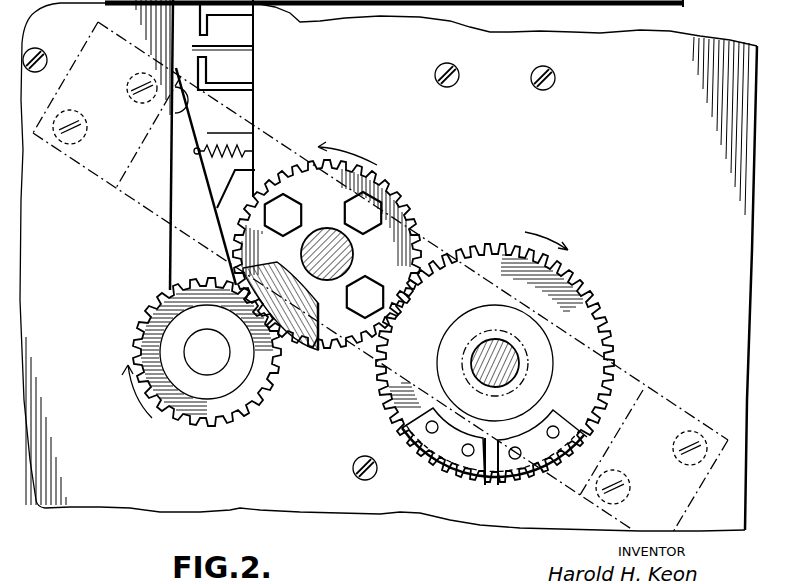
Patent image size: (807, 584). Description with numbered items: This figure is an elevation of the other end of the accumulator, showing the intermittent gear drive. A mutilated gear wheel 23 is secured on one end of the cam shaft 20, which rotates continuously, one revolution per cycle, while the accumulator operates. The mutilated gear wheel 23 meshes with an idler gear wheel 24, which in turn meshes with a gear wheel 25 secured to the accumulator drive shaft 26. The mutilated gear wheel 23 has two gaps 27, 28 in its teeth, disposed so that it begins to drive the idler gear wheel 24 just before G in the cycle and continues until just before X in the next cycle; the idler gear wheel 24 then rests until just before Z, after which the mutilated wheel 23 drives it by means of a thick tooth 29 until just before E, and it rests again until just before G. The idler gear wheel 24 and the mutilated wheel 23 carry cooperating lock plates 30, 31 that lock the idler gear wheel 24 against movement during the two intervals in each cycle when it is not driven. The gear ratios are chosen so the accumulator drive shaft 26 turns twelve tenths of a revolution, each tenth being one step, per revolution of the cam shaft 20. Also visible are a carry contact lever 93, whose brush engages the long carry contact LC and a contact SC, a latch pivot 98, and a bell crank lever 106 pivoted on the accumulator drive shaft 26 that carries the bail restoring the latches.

The cam shaft 20 is at (513, 370).
The mutilated gear wheel 23 is at (489, 262).
The idler gear wheel 24 is at (348, 327).
The gear wheel 25 is at (237, 403).
The accumulator drive shaft 26 is at (207, 365).
The gap 27 is at (567, 457).
The gap 28 is at (423, 455).
The thick tooth 29 is at (493, 477).
The lock plate 30 is at (312, 350).
The lock plate 31 is at (453, 458).
The carry contact lever 93 is at (244, 148).
The pivot 98 is at (235, 51).
The bell crank lever 106 is at (187, 212).
The contact SC is at (250, 22).
The long carry contact LC is at (205, 62).